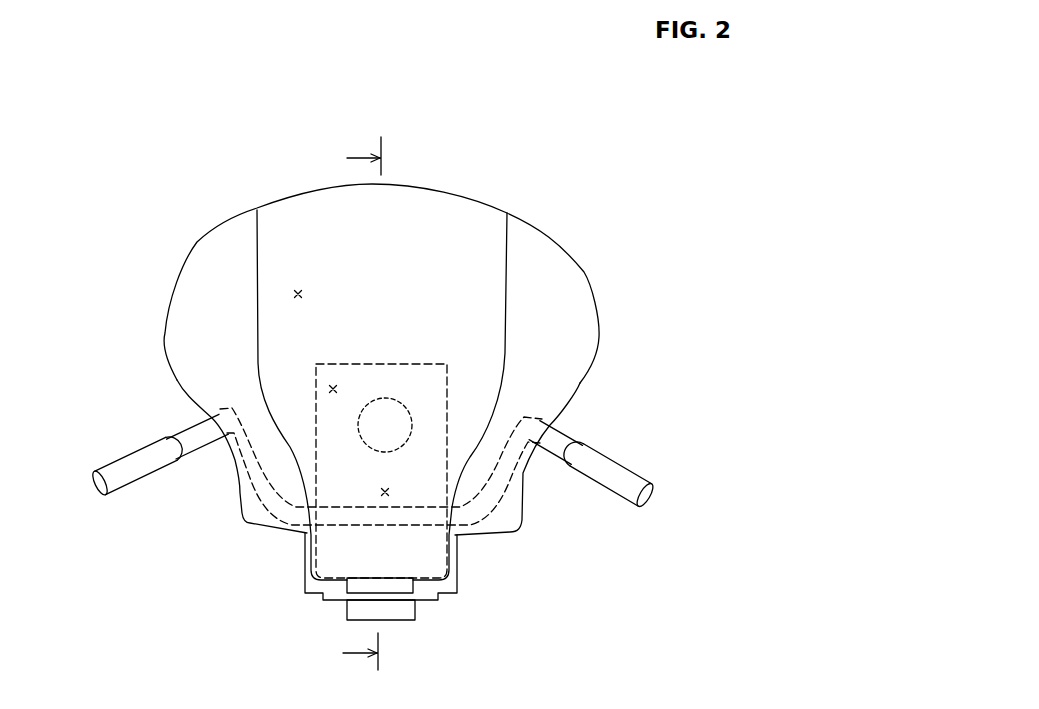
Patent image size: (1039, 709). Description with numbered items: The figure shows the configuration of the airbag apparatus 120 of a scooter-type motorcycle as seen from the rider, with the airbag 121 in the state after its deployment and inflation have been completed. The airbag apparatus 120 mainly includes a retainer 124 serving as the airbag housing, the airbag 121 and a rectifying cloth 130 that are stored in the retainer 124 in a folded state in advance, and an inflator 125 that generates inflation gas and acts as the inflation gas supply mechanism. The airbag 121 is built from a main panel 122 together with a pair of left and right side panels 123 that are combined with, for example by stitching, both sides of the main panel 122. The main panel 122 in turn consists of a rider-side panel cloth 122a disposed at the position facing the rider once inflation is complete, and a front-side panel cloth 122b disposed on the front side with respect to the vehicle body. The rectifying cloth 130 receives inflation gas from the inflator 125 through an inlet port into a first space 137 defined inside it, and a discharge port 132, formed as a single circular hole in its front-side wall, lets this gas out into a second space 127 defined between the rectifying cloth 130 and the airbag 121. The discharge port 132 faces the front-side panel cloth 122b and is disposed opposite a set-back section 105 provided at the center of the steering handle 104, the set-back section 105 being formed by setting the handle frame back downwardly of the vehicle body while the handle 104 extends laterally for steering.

The steering handle 104 is at (135, 465).
The set-back section 105 is at (387, 493).
The airbag apparatus 120 is at (567, 176).
The airbag 121 is at (585, 272).
The main panel 122 is at (558, 122).
The rider-side panel cloth 122a is at (450, 217).
The front-side panel cloth 122b is at (423, 207).
The side panel 123 is at (197, 372).
The retainer 124 is at (458, 580).
The inflator 125 is at (415, 617).
The second space 127 is at (297, 292).
The rectifying cloth 130 is at (367, 360).
The discharge port 132 is at (400, 400).
The first space 137 is at (333, 388).